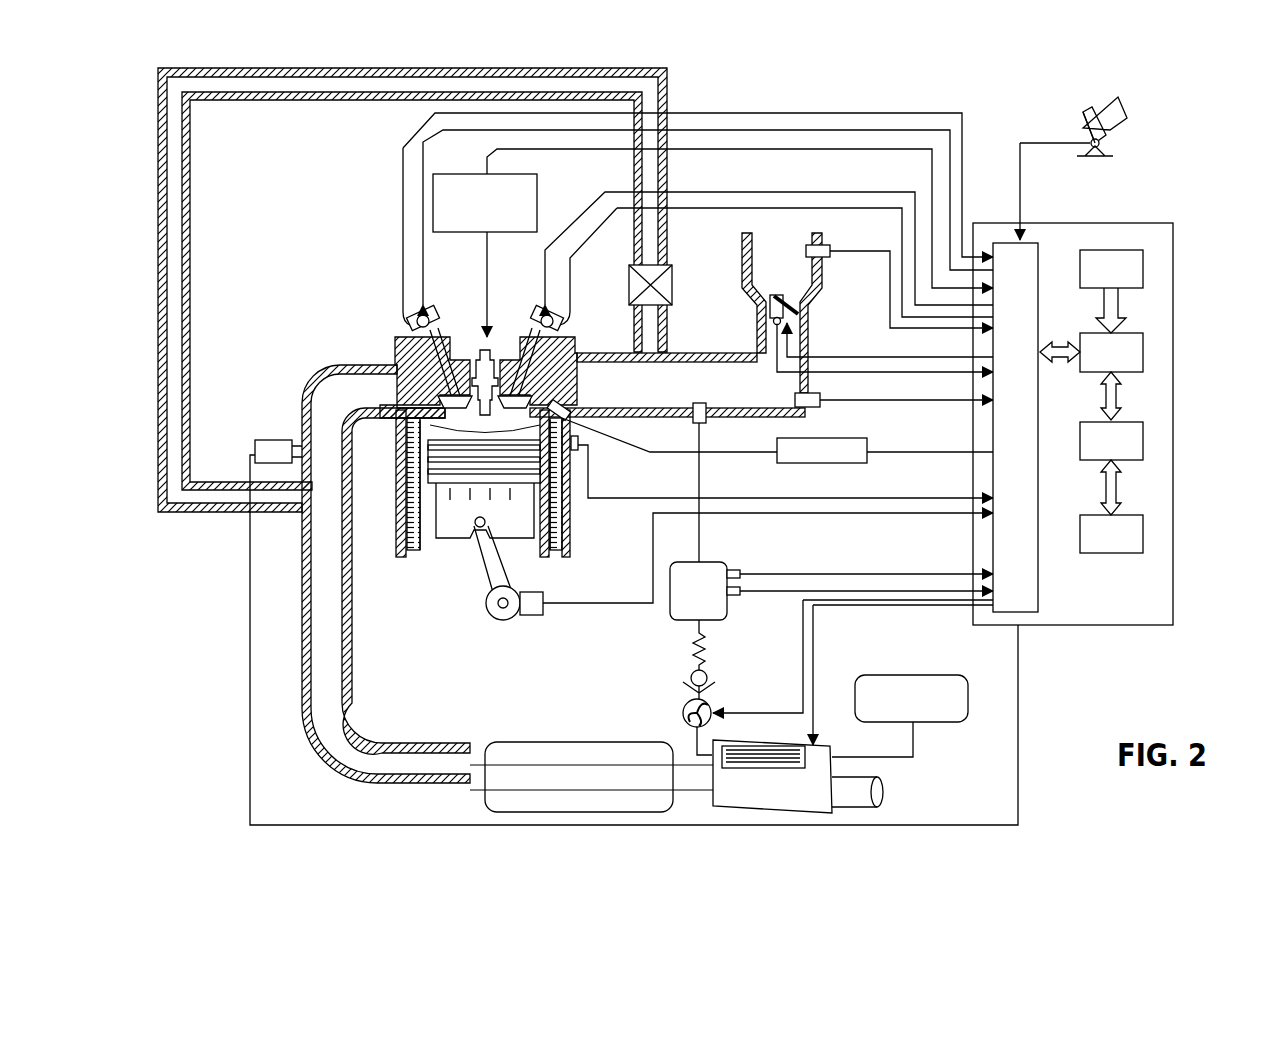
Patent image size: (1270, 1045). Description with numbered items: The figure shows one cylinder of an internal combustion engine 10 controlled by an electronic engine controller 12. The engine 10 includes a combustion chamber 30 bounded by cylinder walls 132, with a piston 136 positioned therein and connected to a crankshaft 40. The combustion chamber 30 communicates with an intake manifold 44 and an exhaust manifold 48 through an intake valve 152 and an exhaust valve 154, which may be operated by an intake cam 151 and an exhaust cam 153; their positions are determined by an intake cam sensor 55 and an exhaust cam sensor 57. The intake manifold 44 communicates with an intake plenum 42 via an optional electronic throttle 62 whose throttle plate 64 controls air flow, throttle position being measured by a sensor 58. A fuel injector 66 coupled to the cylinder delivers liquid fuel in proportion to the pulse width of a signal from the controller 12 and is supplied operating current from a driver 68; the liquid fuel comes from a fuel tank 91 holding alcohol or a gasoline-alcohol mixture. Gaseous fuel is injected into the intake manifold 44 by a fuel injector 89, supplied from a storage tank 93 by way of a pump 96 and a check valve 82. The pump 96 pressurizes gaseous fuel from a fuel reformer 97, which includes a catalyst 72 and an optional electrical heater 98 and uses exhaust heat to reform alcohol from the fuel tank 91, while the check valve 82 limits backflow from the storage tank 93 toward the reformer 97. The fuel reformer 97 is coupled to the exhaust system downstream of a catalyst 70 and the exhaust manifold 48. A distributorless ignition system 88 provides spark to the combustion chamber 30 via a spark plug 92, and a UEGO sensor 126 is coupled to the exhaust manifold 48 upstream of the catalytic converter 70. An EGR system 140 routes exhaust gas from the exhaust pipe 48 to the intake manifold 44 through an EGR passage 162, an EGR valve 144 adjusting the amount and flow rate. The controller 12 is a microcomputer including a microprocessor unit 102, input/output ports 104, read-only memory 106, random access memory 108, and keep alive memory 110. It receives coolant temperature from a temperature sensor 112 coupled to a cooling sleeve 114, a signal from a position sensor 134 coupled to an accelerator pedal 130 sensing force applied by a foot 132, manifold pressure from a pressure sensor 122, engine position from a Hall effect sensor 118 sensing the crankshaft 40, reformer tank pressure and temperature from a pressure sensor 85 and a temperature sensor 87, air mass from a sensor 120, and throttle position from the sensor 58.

The internal combustion engine 10 is at (340, 300).
The electronic engine controller 12 is at (1170, 223).
The combustion chamber 30 is at (405, 512).
The crankshaft 40 is at (490, 612).
The intake plenum 42 is at (786, 277).
The intake manifold 44 is at (734, 394).
The exhaust manifold 48 is at (376, 401).
The intake cam sensor 55 is at (555, 322).
The exhaust cam sensor 57 is at (410, 318).
The throttle position sensor 58 is at (773, 323).
The electronic throttle 62 is at (800, 310).
The throttle plate 64 is at (768, 305).
The fuel injector 66 is at (582, 430).
The driver 68 is at (780, 463).
The catalyst 70 is at (497, 742).
The catalyst 72 is at (757, 745).
The check valve 82 is at (708, 682).
The pressure sensor 85 is at (730, 568).
The temperature sensor 87 is at (740, 596).
The distributorless ignition system 88 is at (447, 174).
The fuel injector 89 is at (699, 420).
The fuel tank 91 is at (915, 675).
The spark plug 92 is at (488, 343).
The storage tank 93 is at (675, 621).
The pump 96 is at (684, 717).
The fuel reformer 97 is at (832, 757).
The electrical heater 98 is at (818, 748).
The microprocessor unit 102 is at (1145, 352).
The input/output ports 104 is at (1038, 250).
The read-only memory 106 is at (1145, 268).
The random access memory 108 is at (1145, 440).
The keep alive memory 110 is at (1145, 532).
The temperature sensor 112 is at (582, 451).
The cooling sleeve 114 is at (566, 535).
The Hall effect sensor 118 is at (533, 616).
The air mass sensor 120 is at (822, 245).
The pressure sensor 122 is at (818, 407).
The UEGO sensor 126 is at (254, 442).
The accelerator pedal 130 is at (1083, 125).
The cylinder walls 132 is at (428, 566).
The position sensor 134 is at (1105, 147).
The piston 136 is at (470, 513).
The exhaust gas recirculation system 140 is at (674, 92).
The EGR valve 144 is at (668, 290).
The intake cam 151 is at (538, 307).
The intake valve 152 is at (523, 393).
The exhaust cam 153 is at (435, 307).
The exhaust valve 154 is at (412, 328).
The EGR passage 162 is at (377, 88).